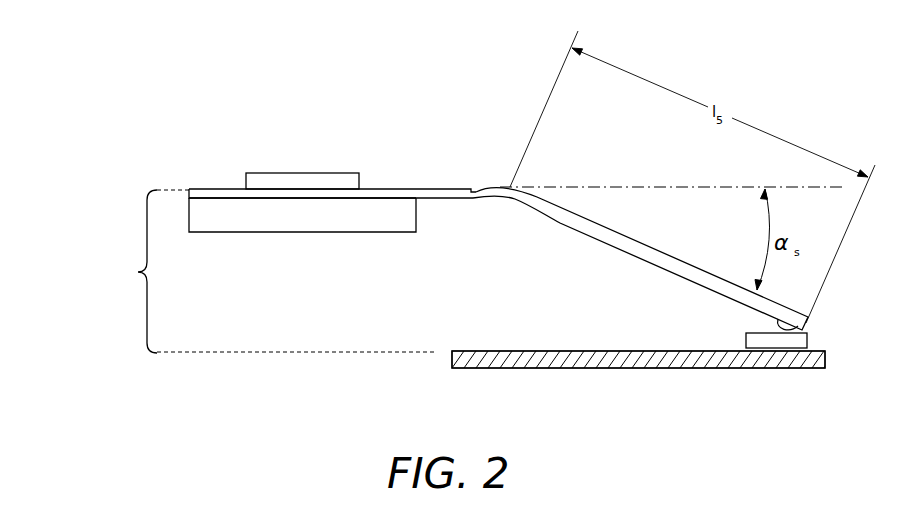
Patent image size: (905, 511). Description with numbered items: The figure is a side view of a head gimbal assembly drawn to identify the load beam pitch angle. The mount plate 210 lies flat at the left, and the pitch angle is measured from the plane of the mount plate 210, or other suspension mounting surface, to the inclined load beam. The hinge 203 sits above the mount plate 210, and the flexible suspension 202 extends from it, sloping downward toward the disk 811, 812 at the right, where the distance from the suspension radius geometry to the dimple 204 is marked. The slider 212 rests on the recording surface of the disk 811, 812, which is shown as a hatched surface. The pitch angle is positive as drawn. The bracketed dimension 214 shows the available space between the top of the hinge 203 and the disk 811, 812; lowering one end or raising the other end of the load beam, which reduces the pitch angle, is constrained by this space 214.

The flexible arm / cantilever plate 202 is at (660, 257).
The hinge 203 is at (213, 192).
The dimple 204 is at (808, 335).
The mount plate 210 is at (348, 224).
The foot pad 212 is at (750, 342).
The available space 214 is at (255, 271).
The disk 811 is at (508, 350).
The disk 812 is at (638, 335).